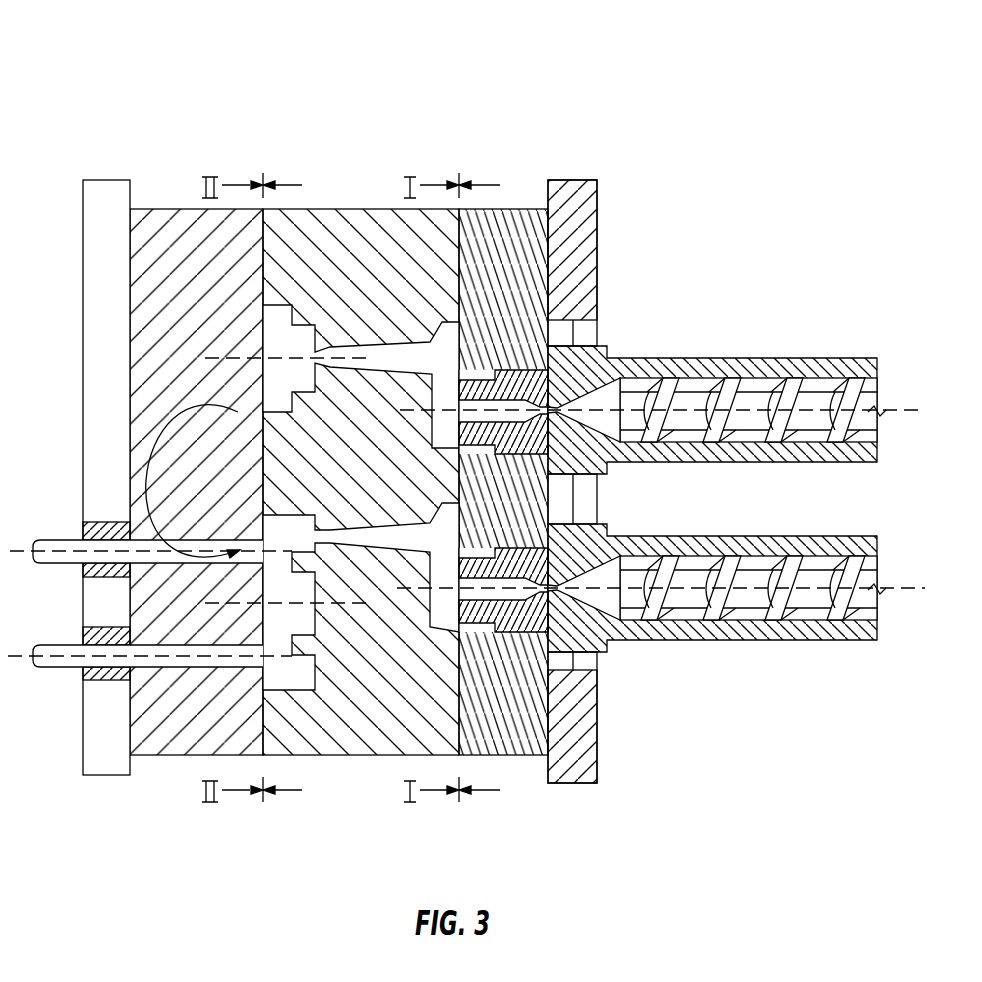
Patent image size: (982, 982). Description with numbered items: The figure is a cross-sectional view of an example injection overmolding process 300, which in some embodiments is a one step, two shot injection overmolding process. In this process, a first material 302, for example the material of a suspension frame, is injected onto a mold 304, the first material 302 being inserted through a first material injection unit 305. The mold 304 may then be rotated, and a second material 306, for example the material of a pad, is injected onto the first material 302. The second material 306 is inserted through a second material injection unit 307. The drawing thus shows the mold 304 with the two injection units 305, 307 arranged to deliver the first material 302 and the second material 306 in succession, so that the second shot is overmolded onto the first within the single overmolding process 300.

The overmolding process 300 is at (466, 421).
The first material 302 is at (445, 353).
The mold 304 is at (103, 285).
The first material injection unit 305 is at (683, 398).
The second material 306 is at (445, 615).
The second material injection unit 307 is at (737, 640).